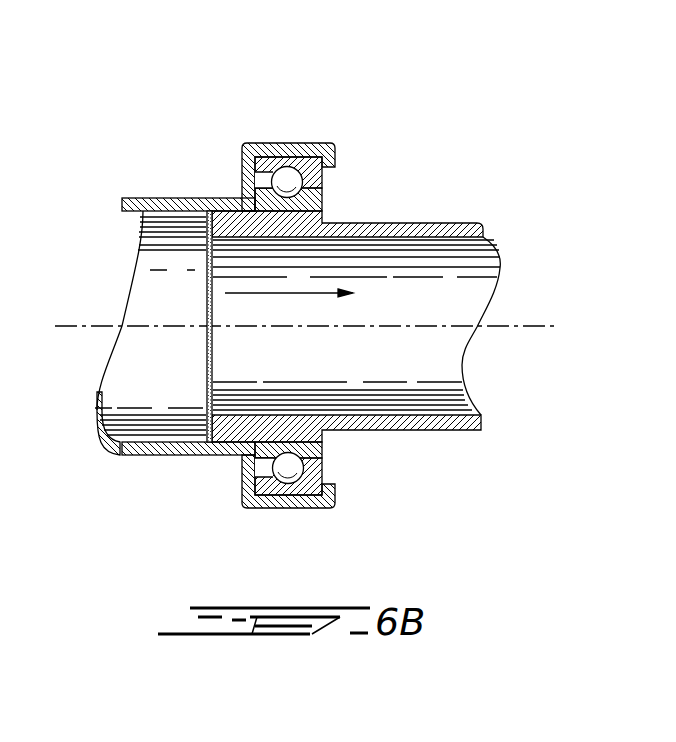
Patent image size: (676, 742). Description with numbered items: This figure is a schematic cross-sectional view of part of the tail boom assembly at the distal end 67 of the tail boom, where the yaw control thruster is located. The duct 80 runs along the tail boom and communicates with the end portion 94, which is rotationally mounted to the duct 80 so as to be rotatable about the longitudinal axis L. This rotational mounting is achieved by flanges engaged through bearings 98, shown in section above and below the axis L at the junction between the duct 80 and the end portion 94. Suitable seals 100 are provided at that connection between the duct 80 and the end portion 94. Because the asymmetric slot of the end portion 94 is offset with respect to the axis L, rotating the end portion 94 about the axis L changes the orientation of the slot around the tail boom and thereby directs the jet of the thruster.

The distal end 67 is at (177, 162).
The duct 80 is at (170, 245).
The end portion 94 is at (423, 206).
The bearings 98 is at (276, 157).
The seals 100 is at (198, 440).
The longitudinal axis L is at (402, 327).